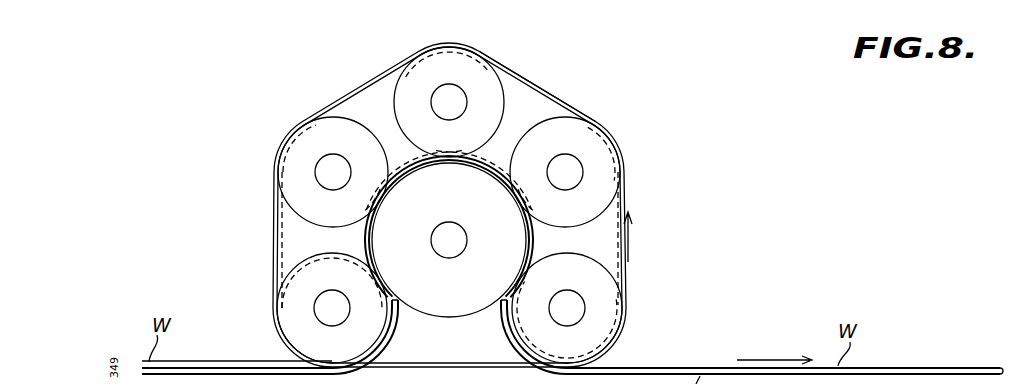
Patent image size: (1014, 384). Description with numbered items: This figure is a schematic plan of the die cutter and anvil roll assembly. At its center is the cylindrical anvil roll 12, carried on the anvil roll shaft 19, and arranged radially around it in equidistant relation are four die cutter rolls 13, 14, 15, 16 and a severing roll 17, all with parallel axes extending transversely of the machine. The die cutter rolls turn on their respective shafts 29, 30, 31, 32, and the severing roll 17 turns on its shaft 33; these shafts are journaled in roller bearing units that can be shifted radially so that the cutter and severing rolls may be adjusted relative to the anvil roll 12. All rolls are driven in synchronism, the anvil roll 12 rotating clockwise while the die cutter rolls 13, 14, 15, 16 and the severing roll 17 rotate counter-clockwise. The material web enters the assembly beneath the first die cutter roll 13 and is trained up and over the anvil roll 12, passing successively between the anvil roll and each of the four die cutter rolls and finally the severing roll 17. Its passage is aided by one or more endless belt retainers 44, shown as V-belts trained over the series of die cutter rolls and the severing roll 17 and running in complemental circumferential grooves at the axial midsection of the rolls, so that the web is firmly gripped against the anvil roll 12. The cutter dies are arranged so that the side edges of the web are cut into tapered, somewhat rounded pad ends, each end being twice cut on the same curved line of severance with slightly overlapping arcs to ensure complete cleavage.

The anvil roll 12 is at (470, 297).
The first die cutter roll 13 is at (306, 289).
The die cutter roll 14 is at (296, 200).
The die cutter roll 15 is at (495, 84).
The die cutter roll 16 is at (581, 140).
The severing roll 17 is at (601, 288).
The anvil roll shaft 19 is at (455, 229).
The shaft 29 is at (330, 320).
The shaft 30 is at (327, 156).
The shaft 31 is at (441, 92).
The shaft 32 is at (582, 184).
The shaft 33 is at (567, 292).
The endless belt retainer 44 is at (540, 90).